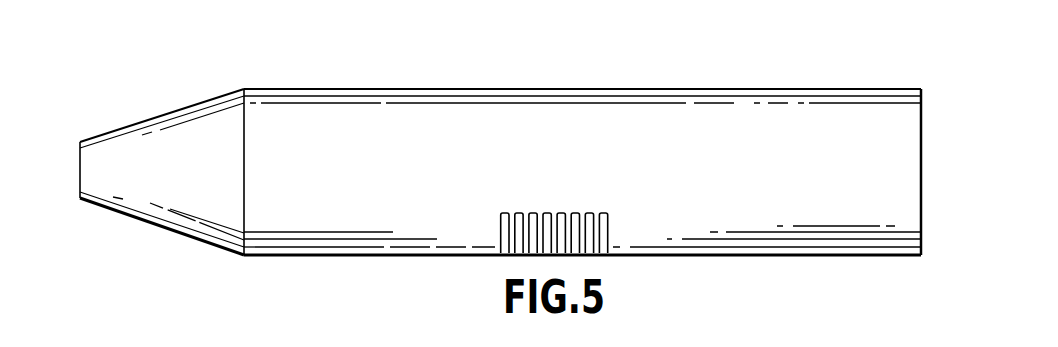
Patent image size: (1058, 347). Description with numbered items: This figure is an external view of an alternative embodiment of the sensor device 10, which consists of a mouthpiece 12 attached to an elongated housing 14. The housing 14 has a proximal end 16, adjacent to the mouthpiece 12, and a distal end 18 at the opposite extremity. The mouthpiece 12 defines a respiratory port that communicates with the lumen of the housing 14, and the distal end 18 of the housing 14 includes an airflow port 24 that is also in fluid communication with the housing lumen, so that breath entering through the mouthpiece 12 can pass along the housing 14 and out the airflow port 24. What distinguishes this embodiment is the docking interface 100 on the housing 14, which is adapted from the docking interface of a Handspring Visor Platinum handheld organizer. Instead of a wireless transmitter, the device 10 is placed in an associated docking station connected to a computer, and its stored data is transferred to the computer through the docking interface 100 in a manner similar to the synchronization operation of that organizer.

The device 10 is at (390, 68).
The mouthpiece 12 is at (165, 113).
The elongated housing 14 is at (585, 88).
The proximal end 16 is at (292, 257).
The distal end 18 is at (877, 257).
The airflow port 24 is at (922, 107).
The docking interface 100 is at (561, 212).